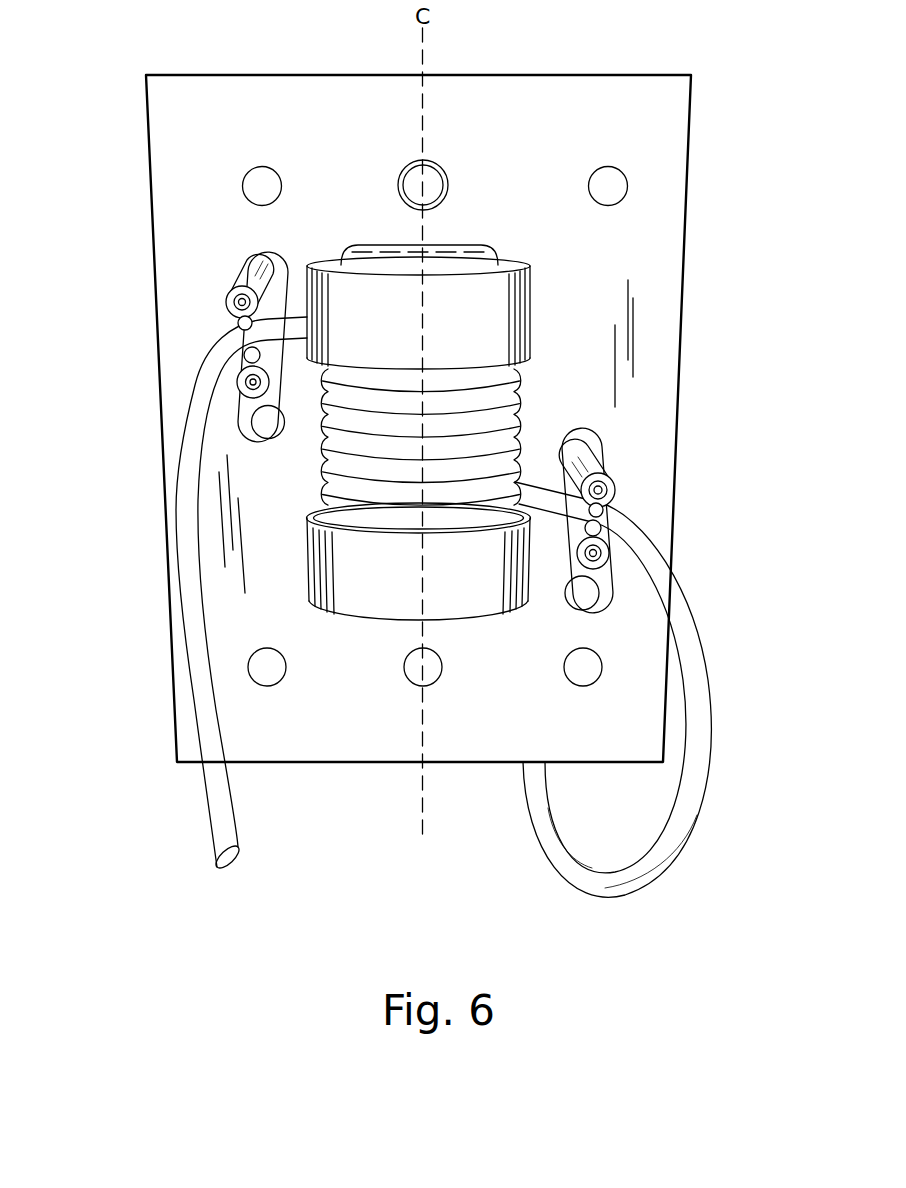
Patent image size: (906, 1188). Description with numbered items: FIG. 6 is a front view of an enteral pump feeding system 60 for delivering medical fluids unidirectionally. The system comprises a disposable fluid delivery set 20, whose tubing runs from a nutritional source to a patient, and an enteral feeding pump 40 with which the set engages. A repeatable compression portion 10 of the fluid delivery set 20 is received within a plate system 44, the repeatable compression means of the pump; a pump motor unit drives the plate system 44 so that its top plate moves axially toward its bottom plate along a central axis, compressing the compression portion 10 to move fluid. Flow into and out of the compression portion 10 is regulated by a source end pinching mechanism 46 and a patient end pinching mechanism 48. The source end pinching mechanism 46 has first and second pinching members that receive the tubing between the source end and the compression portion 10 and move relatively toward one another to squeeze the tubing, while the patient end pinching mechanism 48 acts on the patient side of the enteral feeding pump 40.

The compression portion 10 is at (522, 397).
The fluid delivery set 20 is at (690, 597).
The enteral feeding pump 40 is at (362, 628).
The plate system 44 is at (533, 322).
The source end pinching mechanism 46 is at (228, 290).
The patient end pinching mechanism 48 is at (618, 487).
The enteral pump feeding system 60 is at (143, 740).